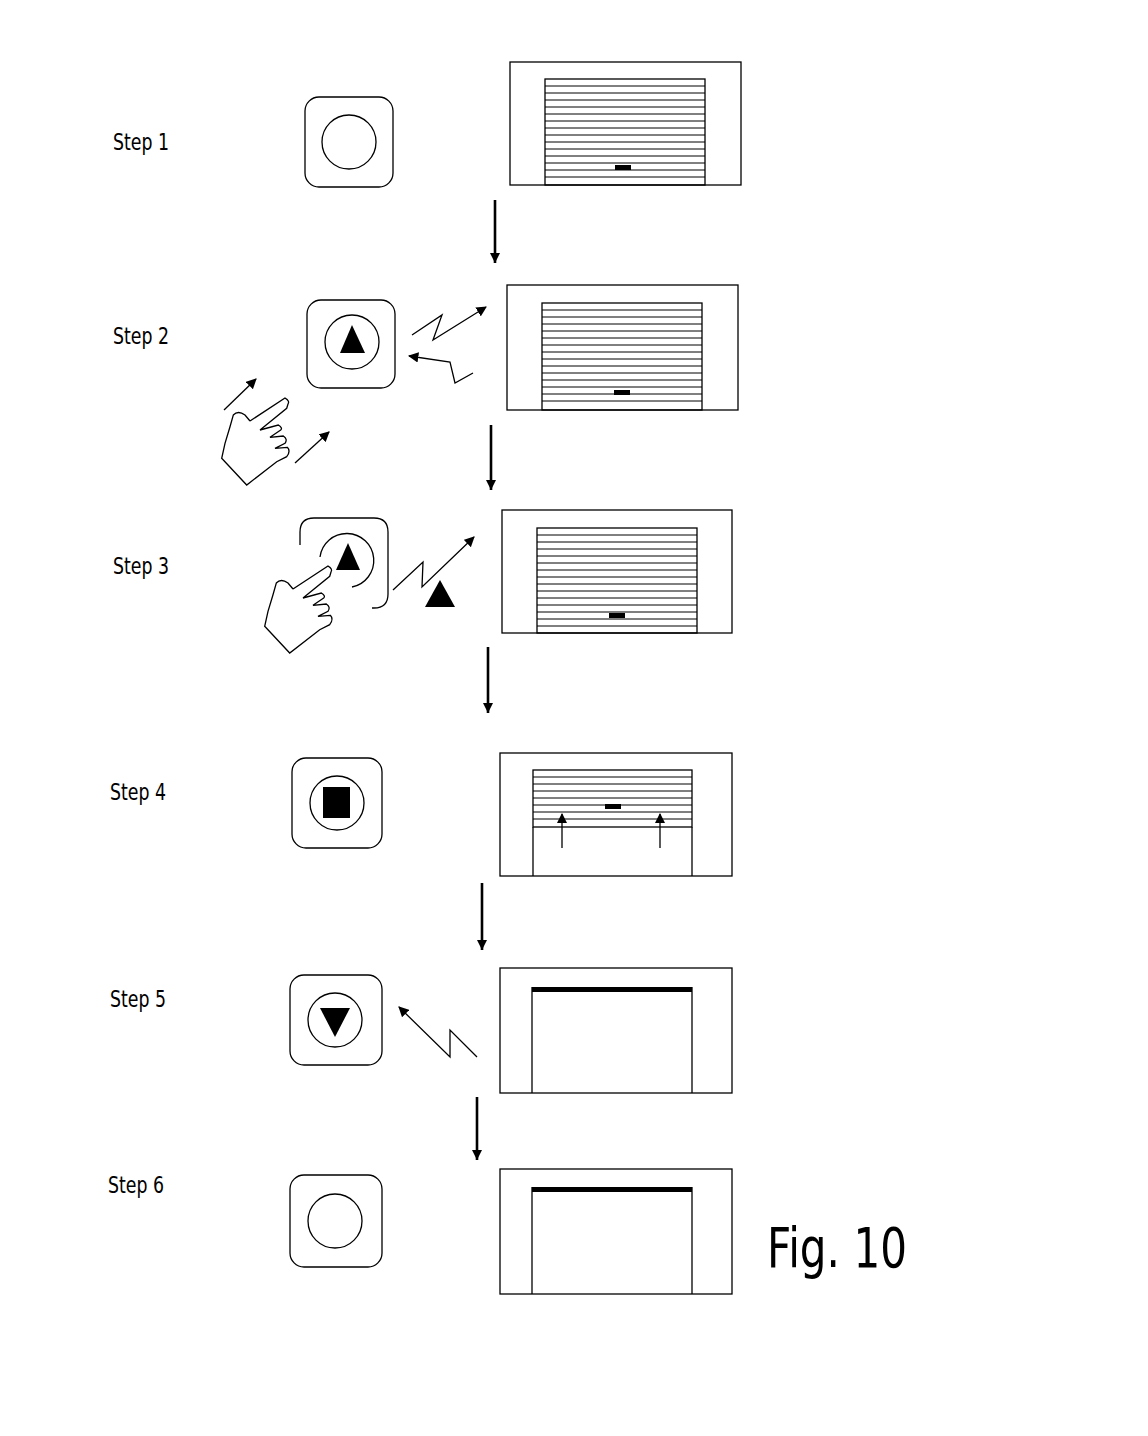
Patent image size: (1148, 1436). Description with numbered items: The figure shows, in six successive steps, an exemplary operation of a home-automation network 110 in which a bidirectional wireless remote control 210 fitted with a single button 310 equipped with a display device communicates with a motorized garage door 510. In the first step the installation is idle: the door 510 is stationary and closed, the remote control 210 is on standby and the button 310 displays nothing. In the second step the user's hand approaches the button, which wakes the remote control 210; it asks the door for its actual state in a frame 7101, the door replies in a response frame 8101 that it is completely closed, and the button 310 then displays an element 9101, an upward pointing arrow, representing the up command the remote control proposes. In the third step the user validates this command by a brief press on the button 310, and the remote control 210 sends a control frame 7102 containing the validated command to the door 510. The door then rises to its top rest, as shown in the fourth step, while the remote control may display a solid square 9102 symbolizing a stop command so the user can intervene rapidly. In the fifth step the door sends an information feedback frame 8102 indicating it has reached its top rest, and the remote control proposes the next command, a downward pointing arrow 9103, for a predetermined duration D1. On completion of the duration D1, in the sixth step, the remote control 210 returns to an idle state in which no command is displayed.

The home-automation network 110 is at (420, 54).
The bidirectional wireless remote control 210 is at (321, 90).
The button 310 is at (334, 171).
The motorized garage door 510 is at (712, 147).
The element representative of the proposed command 9101 is at (346, 330).
The frame 7101 is at (466, 306).
The response frame 8101 is at (438, 380).
The control frame 7102 is at (448, 548).
The solid square 9102 is at (334, 782).
The downward pointing arrow 9103 is at (326, 1000).
The information feedback frame 8102 is at (453, 1026).
The predetermined duration D1 is at (471, 1125).